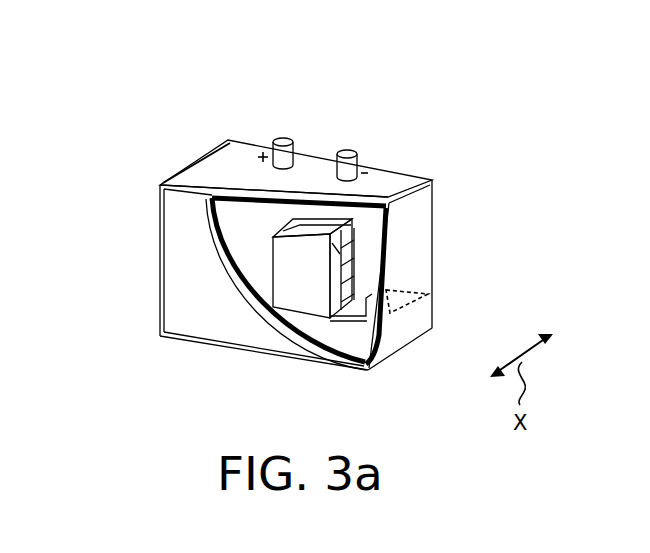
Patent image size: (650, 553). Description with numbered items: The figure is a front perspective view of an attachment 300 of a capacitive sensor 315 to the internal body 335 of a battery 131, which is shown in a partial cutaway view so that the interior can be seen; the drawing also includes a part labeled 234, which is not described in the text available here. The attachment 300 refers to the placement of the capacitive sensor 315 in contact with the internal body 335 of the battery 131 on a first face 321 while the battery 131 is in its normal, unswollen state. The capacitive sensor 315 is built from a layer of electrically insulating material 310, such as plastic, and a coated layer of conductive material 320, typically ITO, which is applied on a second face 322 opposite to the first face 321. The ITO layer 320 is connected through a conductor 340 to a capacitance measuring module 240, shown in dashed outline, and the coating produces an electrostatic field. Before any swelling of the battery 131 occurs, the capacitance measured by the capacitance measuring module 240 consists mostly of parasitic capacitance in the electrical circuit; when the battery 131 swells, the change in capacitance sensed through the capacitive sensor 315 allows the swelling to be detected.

The attachment 300 is at (98, 75).
The battery 131 is at (160, 337).
The housing side wall 234 is at (161, 256).
The layer of electrically insulating material 310 is at (355, 248).
The capacitive sensor 315 is at (266, 318).
The coated layer of conductive material 320 is at (356, 280).
The first face 321 is at (313, 221).
The second face 322 is at (313, 237).
The internal body 335 is at (355, 214).
The conductor 340 is at (348, 322).
The capacitance measuring module 240 is at (428, 297).